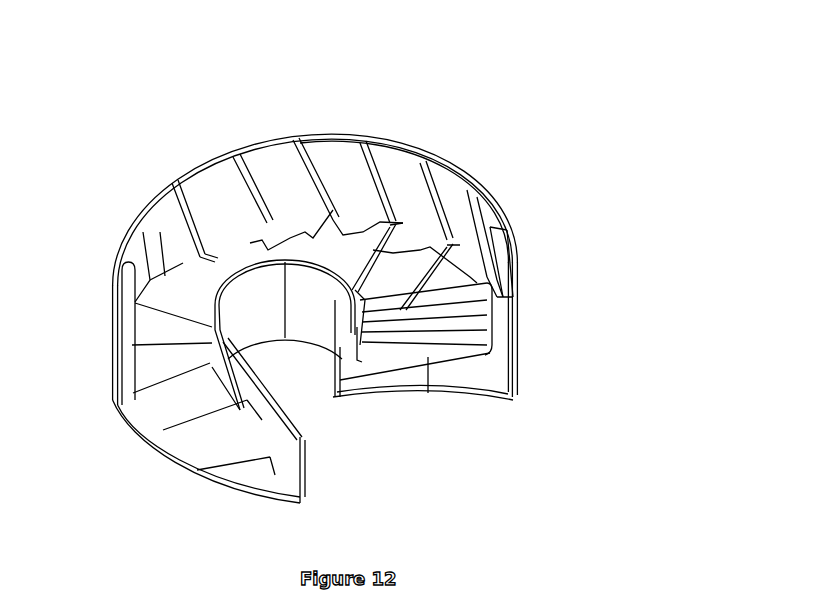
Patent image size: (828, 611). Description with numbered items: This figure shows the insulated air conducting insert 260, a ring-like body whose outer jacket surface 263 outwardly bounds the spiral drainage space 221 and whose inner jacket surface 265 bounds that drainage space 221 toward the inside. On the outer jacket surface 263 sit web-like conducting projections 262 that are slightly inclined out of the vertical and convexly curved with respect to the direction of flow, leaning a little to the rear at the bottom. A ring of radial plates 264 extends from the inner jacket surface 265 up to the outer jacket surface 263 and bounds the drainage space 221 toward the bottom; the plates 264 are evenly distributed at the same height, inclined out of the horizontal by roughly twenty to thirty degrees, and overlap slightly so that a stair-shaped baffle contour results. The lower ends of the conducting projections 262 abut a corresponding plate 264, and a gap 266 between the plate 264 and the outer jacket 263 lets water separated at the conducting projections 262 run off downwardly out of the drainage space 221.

The air conducting insert 260 is at (535, 190).
The spiral drainage space 221 is at (180, 363).
The conducting projections 262 is at (430, 177).
The outer jacket surface 263 is at (343, 158).
The radial plates 264 is at (217, 267).
The inner jacket surface 265 is at (252, 332).
The gap 266 is at (313, 223).